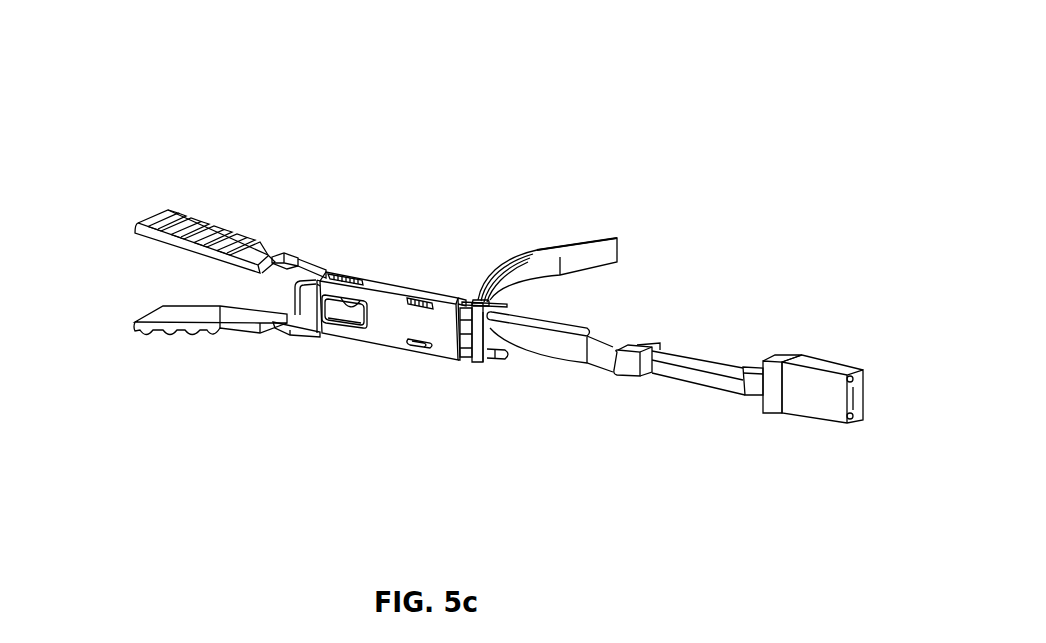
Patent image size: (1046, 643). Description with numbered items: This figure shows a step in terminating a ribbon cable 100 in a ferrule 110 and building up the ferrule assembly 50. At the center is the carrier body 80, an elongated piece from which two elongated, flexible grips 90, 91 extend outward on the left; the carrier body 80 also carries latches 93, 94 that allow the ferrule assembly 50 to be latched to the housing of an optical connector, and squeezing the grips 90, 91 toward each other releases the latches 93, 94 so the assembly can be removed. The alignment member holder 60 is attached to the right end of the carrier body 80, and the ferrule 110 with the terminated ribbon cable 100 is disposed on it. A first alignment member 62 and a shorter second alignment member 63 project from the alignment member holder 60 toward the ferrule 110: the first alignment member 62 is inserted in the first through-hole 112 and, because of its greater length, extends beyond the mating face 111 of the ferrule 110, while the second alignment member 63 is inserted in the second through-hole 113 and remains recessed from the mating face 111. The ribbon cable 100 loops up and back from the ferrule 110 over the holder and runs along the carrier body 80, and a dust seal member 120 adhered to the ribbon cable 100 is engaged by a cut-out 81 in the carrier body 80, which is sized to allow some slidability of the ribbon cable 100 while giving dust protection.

The ferrule assembly 50 is at (552, 82).
The alignment member holder 60 is at (470, 360).
The first alignment member 62 is at (548, 323).
The second alignment member 63 is at (505, 358).
The carrier body 80 is at (383, 334).
The cut-out 81 is at (358, 302).
The elongated flexible grip 90 is at (137, 230).
The elongated flexible grip 91 is at (137, 323).
The latch 93 is at (293, 256).
The latch 94 is at (270, 334).
The ribbon cable 100 is at (543, 257).
The ferrule 110 is at (809, 406).
The mating face 111 is at (857, 398).
The first through-hole 112 is at (852, 379).
The second through-hole 113 is at (851, 420).
The dust seal member 120 is at (626, 367).